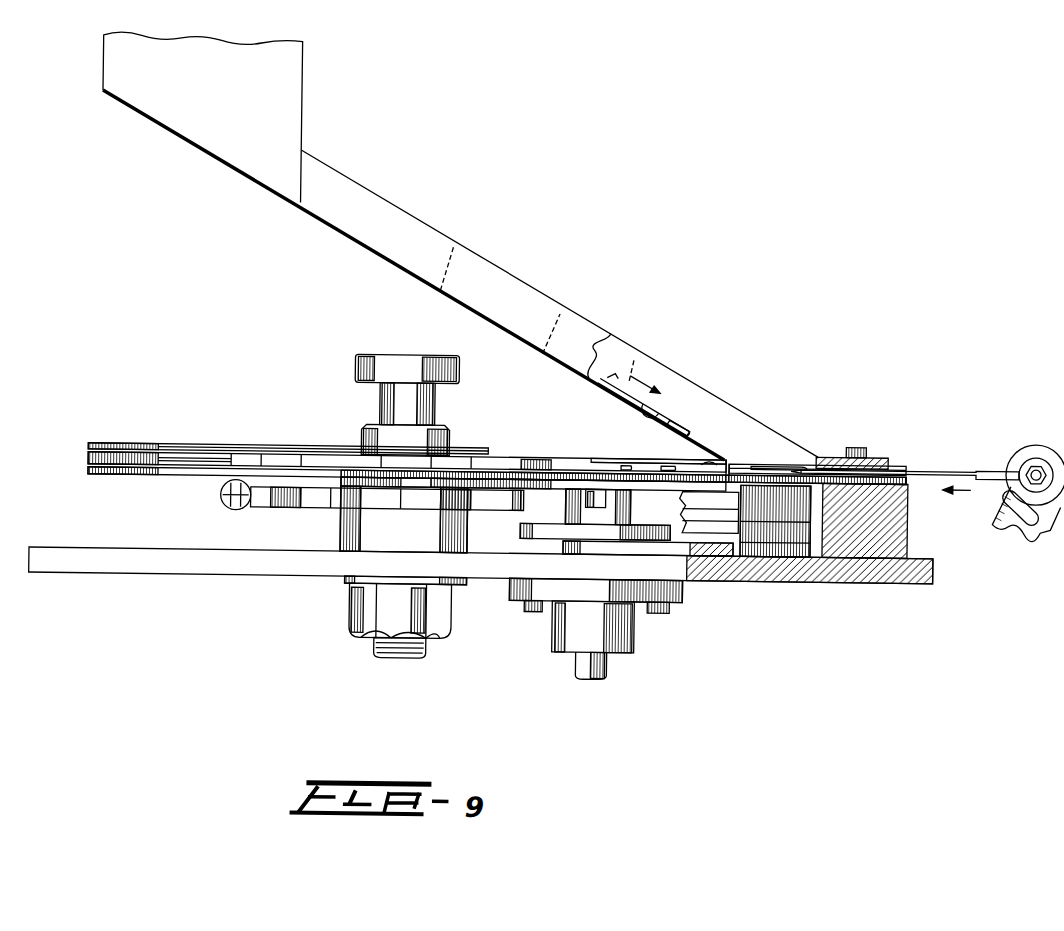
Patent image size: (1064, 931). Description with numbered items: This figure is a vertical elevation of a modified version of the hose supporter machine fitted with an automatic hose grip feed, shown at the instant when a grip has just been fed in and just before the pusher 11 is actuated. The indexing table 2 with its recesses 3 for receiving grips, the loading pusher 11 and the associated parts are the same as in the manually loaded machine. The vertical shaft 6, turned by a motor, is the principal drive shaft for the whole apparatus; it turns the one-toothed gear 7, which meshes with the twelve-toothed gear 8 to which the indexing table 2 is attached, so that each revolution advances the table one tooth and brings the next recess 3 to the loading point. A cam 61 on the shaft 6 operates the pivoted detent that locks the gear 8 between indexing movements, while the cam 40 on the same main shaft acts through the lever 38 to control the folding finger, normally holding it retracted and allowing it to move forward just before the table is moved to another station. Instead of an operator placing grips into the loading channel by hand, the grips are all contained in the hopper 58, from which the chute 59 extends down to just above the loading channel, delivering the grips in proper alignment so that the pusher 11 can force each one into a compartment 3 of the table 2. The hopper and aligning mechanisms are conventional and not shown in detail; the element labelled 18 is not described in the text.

The indexing table 2 is at (505, 452).
The recesses 3 is at (123, 464).
The vertical shaft 6 is at (610, 654).
The one-toothed gear 7 is at (605, 492).
The twelve-toothed gear 8 is at (523, 490).
The pusher 11 is at (945, 456).
The pivot pin and bar 18 is at (255, 497).
The lever 38 is at (733, 538).
The cam 40 is at (560, 541).
The hopper 58 is at (251, 105).
The chute 59 is at (523, 279).
The cam 61 is at (517, 516).